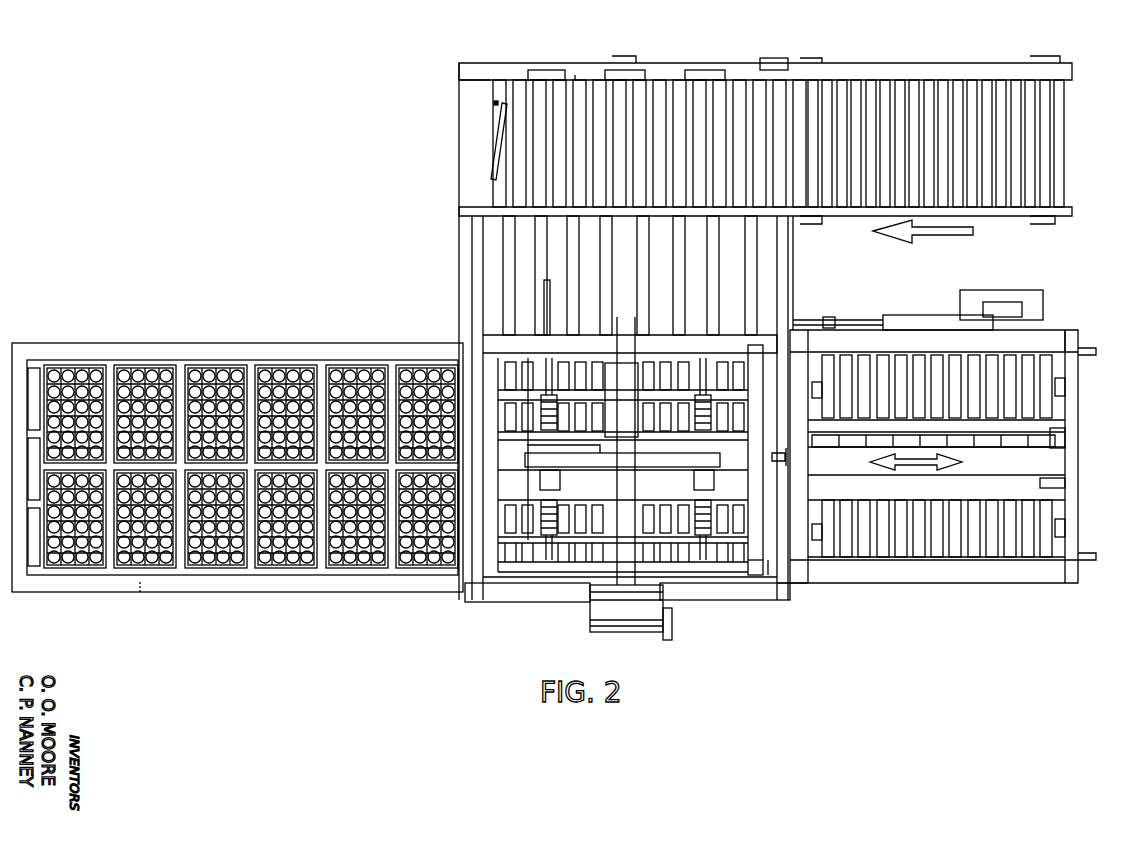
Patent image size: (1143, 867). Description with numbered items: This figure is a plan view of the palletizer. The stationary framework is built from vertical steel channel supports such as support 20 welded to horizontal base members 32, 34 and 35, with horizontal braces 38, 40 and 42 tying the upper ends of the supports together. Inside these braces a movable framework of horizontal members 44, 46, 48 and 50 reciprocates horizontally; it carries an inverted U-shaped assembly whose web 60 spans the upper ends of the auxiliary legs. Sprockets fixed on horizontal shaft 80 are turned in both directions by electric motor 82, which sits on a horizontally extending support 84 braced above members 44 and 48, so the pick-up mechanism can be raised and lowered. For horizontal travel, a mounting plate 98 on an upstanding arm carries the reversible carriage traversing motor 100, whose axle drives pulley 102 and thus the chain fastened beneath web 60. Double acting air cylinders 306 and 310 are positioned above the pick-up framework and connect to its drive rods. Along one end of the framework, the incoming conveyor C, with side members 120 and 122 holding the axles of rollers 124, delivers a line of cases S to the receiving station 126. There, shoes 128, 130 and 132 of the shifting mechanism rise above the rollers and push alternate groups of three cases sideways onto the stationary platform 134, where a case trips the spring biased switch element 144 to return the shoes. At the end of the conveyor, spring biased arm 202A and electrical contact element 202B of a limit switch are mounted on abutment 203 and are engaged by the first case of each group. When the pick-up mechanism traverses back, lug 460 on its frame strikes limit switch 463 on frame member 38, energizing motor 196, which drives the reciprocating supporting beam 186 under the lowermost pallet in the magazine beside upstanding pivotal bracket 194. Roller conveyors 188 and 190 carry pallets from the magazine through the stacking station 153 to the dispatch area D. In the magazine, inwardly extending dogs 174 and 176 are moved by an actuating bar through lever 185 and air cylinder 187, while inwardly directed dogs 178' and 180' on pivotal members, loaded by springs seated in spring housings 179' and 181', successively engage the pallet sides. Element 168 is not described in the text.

The vertical steel channel support 20 is at (766, 58).
The horizontal base member 32 is at (932, 584).
The horizontal base member 34 is at (1062, 332).
The horizontal base member 35 is at (588, 74).
The horizontal brace 38 is at (790, 312).
The horizontal brace 40 is at (708, 594).
The horizontal brace 42 is at (472, 280).
The horizontal member of movable framework 44 is at (503, 345).
The horizontal member of movable framework 46 is at (755, 478).
The horizontal member of movable framework 48 is at (740, 572).
The horizontal member of movable framework 50 is at (498, 550).
The web 60 is at (660, 455).
The horizontal shaft 80 is at (570, 456).
The electric motor 82 is at (632, 407).
The horizontally extending support 84 is at (622, 496).
The mounting plate 98 is at (582, 580).
The carriage traversing motor 100 is at (596, 612).
The pulley 102 is at (672, 632).
The side member 120 is at (988, 72).
The side member 122 is at (1015, 212).
The rollers 124 is at (883, 90).
The receiving station 126 is at (674, 161).
The laterally shiftable shoe 128 is at (548, 72).
The laterally shiftable shoe 130 is at (640, 70).
The laterally shiftable shoe 132 is at (707, 70).
The stationary platform 134 is at (699, 288).
The spring biased switch element 144 is at (549, 318).
The stacking station 153 is at (528, 540).
The frame foot 168 is at (802, 585).
The inwardly extending dog 174 is at (822, 540).
The inwardly extending dog 176 is at (818, 382).
The inwardly directed dog 178' is at (1090, 516).
The spring housing 179' is at (1099, 363).
The inwardly directed dog 180' is at (1088, 398).
The spring housing 181' is at (1085, 579).
The lever 185 is at (812, 322).
The supporting beam 186 is at (956, 469).
The air cylinder 187 is at (912, 315).
The roller conveyor 188 is at (917, 534).
The roller conveyor 190 is at (914, 397).
The upstanding pivotal bracket 194 is at (1058, 450).
The motor 196 is at (978, 294).
The spring biased arm 202A is at (500, 132).
The electrical contact element 202B is at (494, 103).
The abutment 203 is at (470, 176).
The double acting air cylinder 306 is at (545, 480).
The double acting air cylinder 310 is at (697, 480).
The lug 460 is at (772, 567).
The limit switch 463 is at (795, 456).
The incoming conveyor C is at (926, 62).
The dispatch area D is at (140, 582).
The cases S is at (80, 362).